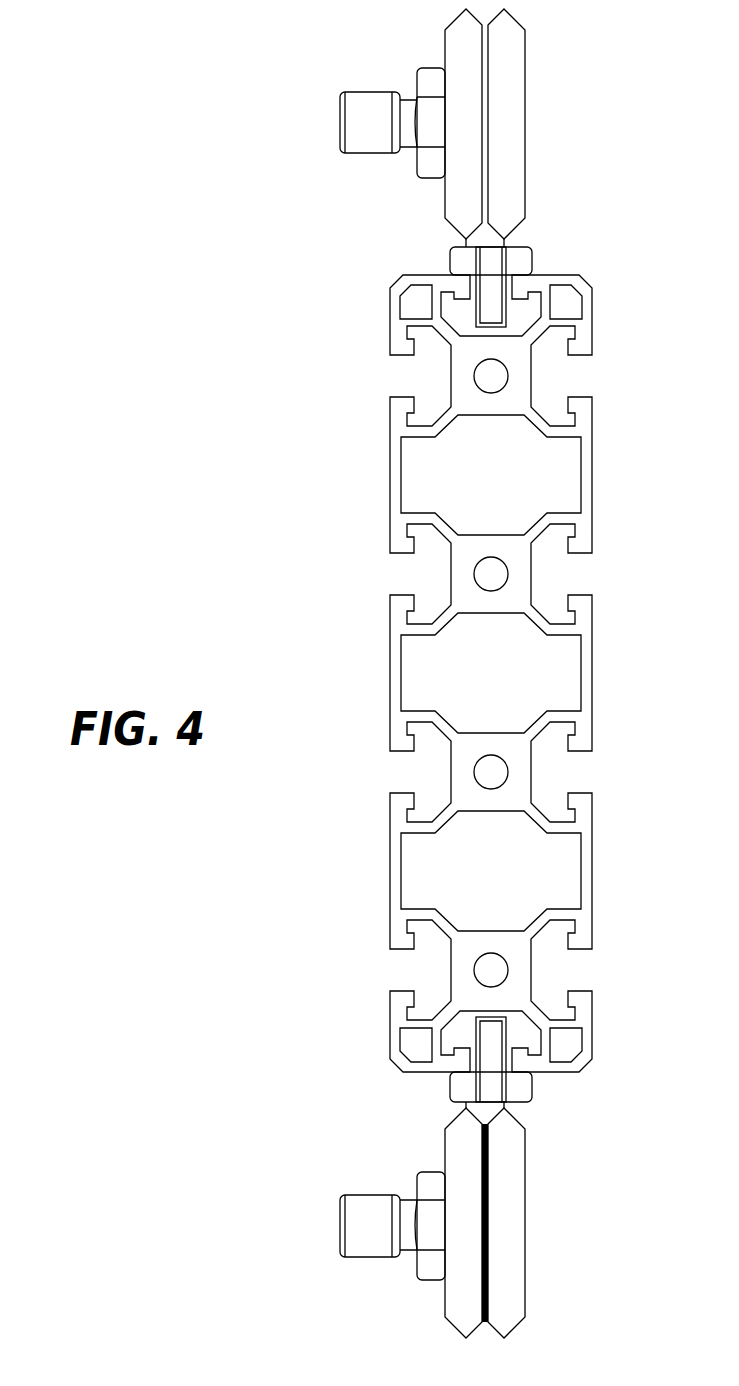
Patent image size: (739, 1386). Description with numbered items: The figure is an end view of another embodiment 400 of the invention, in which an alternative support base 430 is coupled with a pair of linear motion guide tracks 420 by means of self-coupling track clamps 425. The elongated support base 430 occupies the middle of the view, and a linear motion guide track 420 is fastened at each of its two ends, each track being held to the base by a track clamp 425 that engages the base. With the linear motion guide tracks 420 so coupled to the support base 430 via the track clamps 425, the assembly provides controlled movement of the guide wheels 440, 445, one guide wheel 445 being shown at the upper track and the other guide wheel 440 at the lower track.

The embodiment 400 is at (326, 45).
The linear motion guide track 420 is at (493, 276).
The track clamp 425 is at (532, 262).
The support base 430 is at (592, 674).
The guide wheel 440 is at (525, 1223).
The guide wheel 445 is at (525, 124).